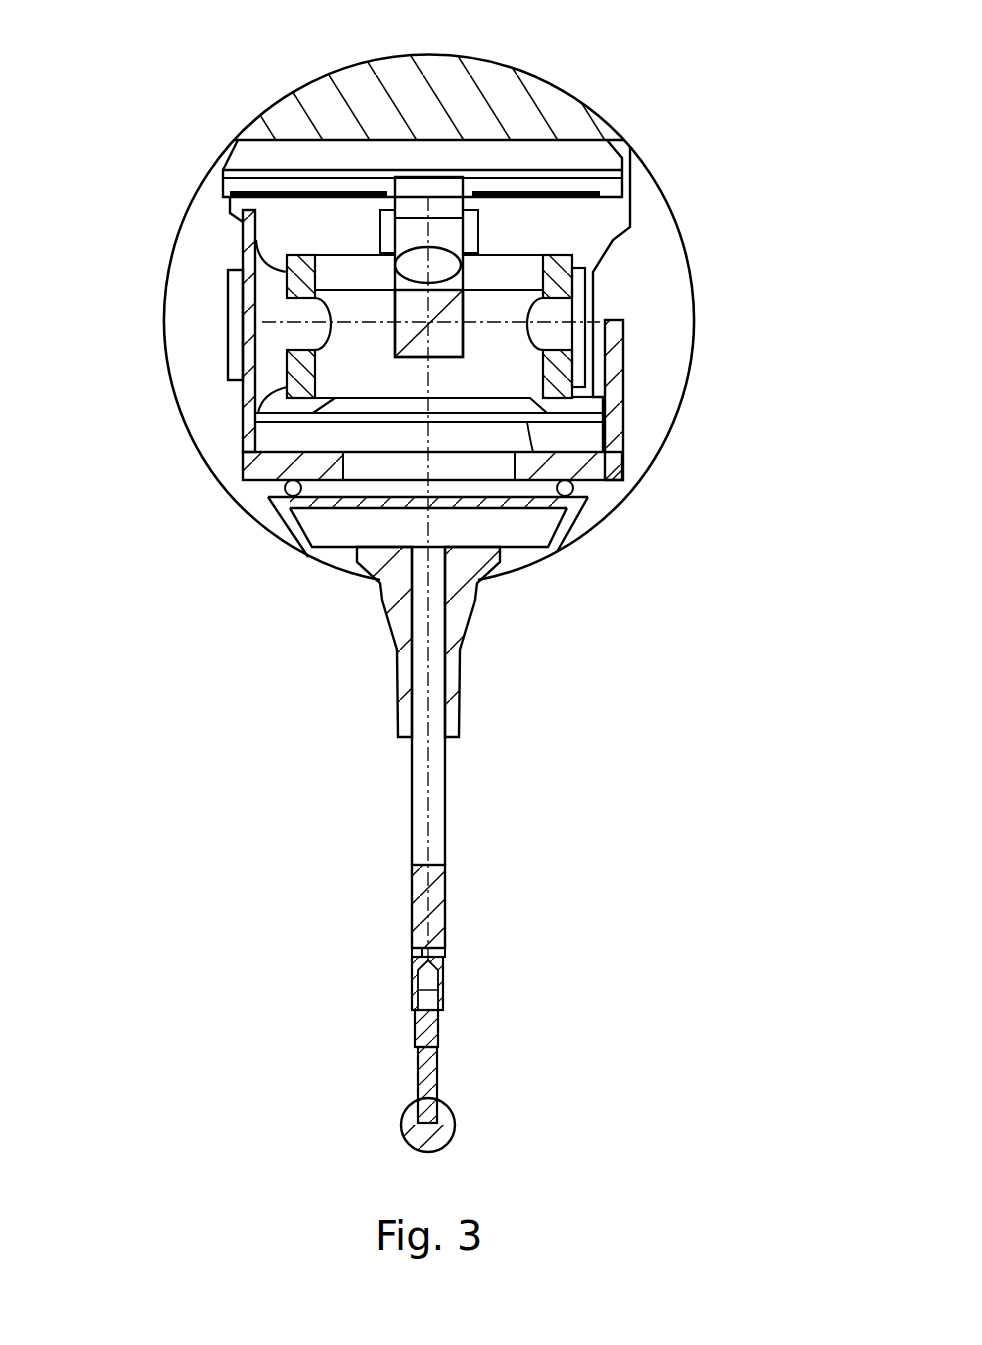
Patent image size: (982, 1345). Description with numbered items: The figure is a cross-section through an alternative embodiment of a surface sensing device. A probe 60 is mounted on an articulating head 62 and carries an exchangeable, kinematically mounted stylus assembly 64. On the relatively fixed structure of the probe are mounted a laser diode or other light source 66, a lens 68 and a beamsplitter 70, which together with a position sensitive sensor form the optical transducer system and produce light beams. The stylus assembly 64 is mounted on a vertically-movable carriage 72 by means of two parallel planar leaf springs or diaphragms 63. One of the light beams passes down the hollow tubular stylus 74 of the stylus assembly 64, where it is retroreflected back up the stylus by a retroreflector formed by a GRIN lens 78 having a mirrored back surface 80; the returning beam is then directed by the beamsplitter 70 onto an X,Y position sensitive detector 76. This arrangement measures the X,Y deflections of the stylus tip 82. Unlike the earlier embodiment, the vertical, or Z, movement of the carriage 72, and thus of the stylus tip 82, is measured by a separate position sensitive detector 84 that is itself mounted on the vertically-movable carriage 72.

The probe 60 is at (640, 369).
The articulating head 62 is at (178, 238).
The parallel planar leaf springs or diaphragms 63 is at (298, 192).
The stylus assembly 64 is at (340, 650).
The laser diode or light source 66 is at (448, 193).
The lens 68 is at (450, 265).
The beamsplitter 70 is at (463, 350).
The vertically-movable carriage 72 is at (256, 481).
The hollow tubular stylus 74 is at (448, 810).
The X,Y position sensitive detector 76 is at (578, 313).
The GRIN lens 78 is at (418, 912).
The mirrored back surface 80 is at (422, 961).
The stylus tip 82 is at (456, 1120).
The position sensitive detector 84 is at (228, 320).